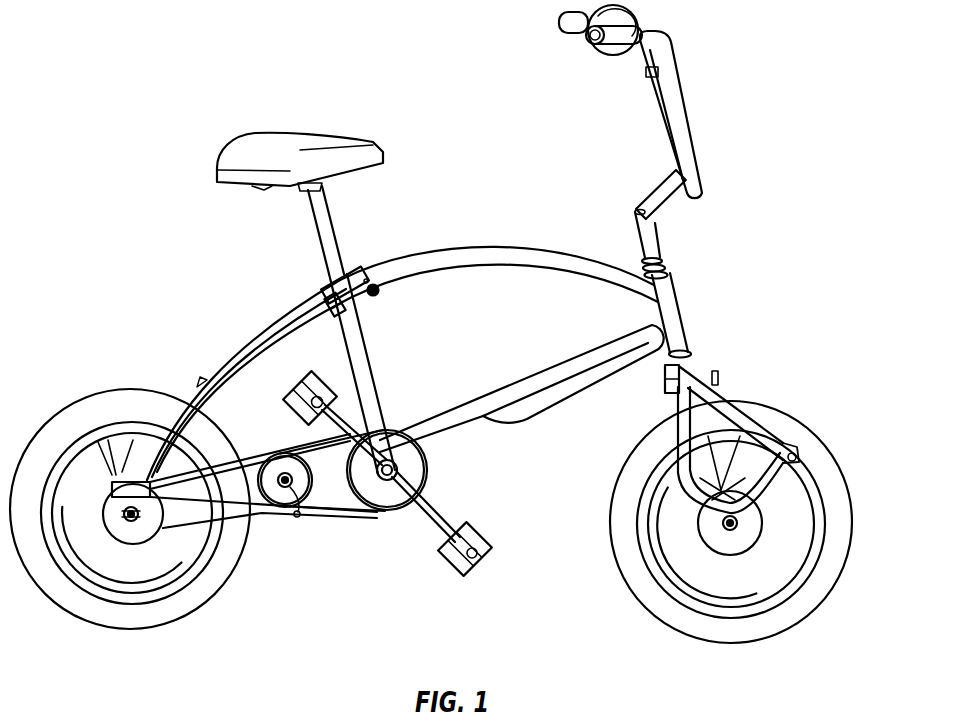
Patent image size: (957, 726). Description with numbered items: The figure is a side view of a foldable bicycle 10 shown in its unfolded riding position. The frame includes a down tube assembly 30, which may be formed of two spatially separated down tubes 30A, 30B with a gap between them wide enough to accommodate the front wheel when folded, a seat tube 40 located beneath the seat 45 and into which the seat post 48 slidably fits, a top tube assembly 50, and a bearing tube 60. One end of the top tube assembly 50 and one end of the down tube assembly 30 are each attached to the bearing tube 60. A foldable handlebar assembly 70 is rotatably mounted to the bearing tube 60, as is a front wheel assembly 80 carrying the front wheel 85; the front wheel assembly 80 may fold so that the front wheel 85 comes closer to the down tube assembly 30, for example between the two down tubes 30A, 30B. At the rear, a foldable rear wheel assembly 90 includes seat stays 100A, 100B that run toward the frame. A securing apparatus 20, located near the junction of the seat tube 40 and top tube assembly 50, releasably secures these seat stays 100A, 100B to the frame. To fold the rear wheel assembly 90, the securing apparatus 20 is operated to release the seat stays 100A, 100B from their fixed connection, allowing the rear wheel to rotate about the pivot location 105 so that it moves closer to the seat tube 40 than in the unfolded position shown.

The foldable bicycle 10 is at (428, 92).
The securing apparatus 20 is at (363, 292).
The down tube assembly 30 is at (522, 415).
The down tube 30A is at (550, 403).
The down tube 30B is at (527, 380).
The seat tube 40 is at (367, 355).
The seat 45 is at (245, 145).
The seat post 48 is at (328, 238).
The top tube assembly 50 is at (500, 250).
The bearing tube 60 is at (670, 310).
The handlebar assembly 70 is at (700, 90).
The front wheel assembly 80 is at (844, 434).
The front wheel 85 is at (733, 642).
The rear wheel assembly 90 is at (123, 350).
The seat stay 100A is at (245, 337).
The seat stay 100B is at (268, 338).
The pivot location 105 is at (287, 488).